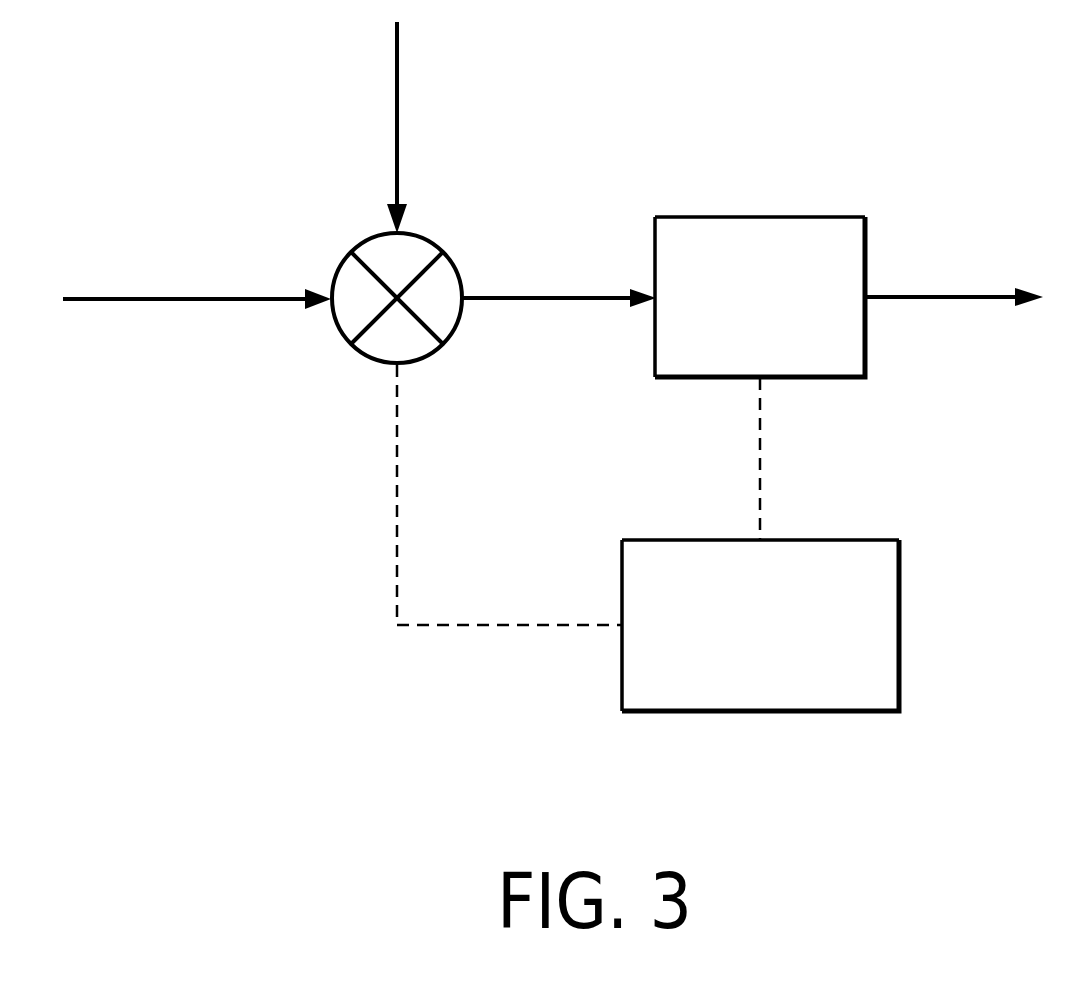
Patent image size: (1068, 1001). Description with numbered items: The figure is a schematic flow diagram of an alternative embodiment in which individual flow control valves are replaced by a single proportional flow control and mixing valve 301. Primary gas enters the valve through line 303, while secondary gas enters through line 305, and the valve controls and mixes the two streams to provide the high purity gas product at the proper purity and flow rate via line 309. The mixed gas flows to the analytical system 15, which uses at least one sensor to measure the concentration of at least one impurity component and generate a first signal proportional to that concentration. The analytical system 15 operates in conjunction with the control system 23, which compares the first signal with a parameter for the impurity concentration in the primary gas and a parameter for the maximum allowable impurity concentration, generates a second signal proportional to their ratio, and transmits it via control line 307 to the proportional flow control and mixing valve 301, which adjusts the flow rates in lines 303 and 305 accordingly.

The proportional flow control and mixing valve 301 is at (361, 357).
The line 303 is at (197, 297).
The line 305 is at (399, 97).
The control line 307 is at (399, 511).
The line 309 is at (508, 300).
The analytical system 15 is at (787, 312).
The control system 23 is at (786, 643).